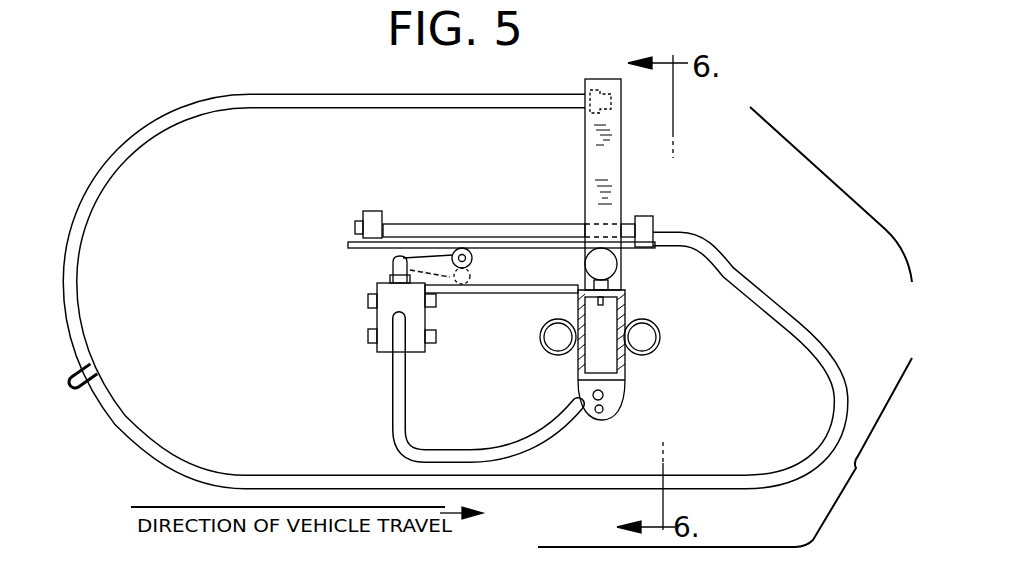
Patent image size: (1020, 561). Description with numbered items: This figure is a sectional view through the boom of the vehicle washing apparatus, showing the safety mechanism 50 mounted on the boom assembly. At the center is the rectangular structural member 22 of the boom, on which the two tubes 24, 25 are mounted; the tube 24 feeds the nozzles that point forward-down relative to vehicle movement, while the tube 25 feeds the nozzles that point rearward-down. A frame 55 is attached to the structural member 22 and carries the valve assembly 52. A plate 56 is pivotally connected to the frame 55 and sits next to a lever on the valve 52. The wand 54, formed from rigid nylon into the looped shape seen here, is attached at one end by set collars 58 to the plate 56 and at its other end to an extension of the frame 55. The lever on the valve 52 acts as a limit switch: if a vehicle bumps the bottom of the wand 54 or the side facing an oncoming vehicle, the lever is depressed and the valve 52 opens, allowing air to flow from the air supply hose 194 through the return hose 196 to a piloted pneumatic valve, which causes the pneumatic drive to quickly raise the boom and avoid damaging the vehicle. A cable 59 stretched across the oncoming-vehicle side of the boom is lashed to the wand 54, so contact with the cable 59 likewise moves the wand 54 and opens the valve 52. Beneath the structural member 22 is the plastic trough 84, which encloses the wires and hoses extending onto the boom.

The rectangular structural member 22 is at (627, 370).
The tube 24 is at (661, 341).
The tube 25 is at (541, 339).
The safety mechanism 50 is at (862, 463).
The valve assembly 52 is at (392, 270).
The wand 54 is at (697, 232).
The frame 55 is at (597, 154).
The plate 56 is at (505, 240).
The set collars 58 is at (597, 76).
The cable 59 is at (68, 389).
The plastic trough 84 is at (619, 410).
The air supply hose 194 is at (577, 393).
The return hose 196 is at (392, 381).